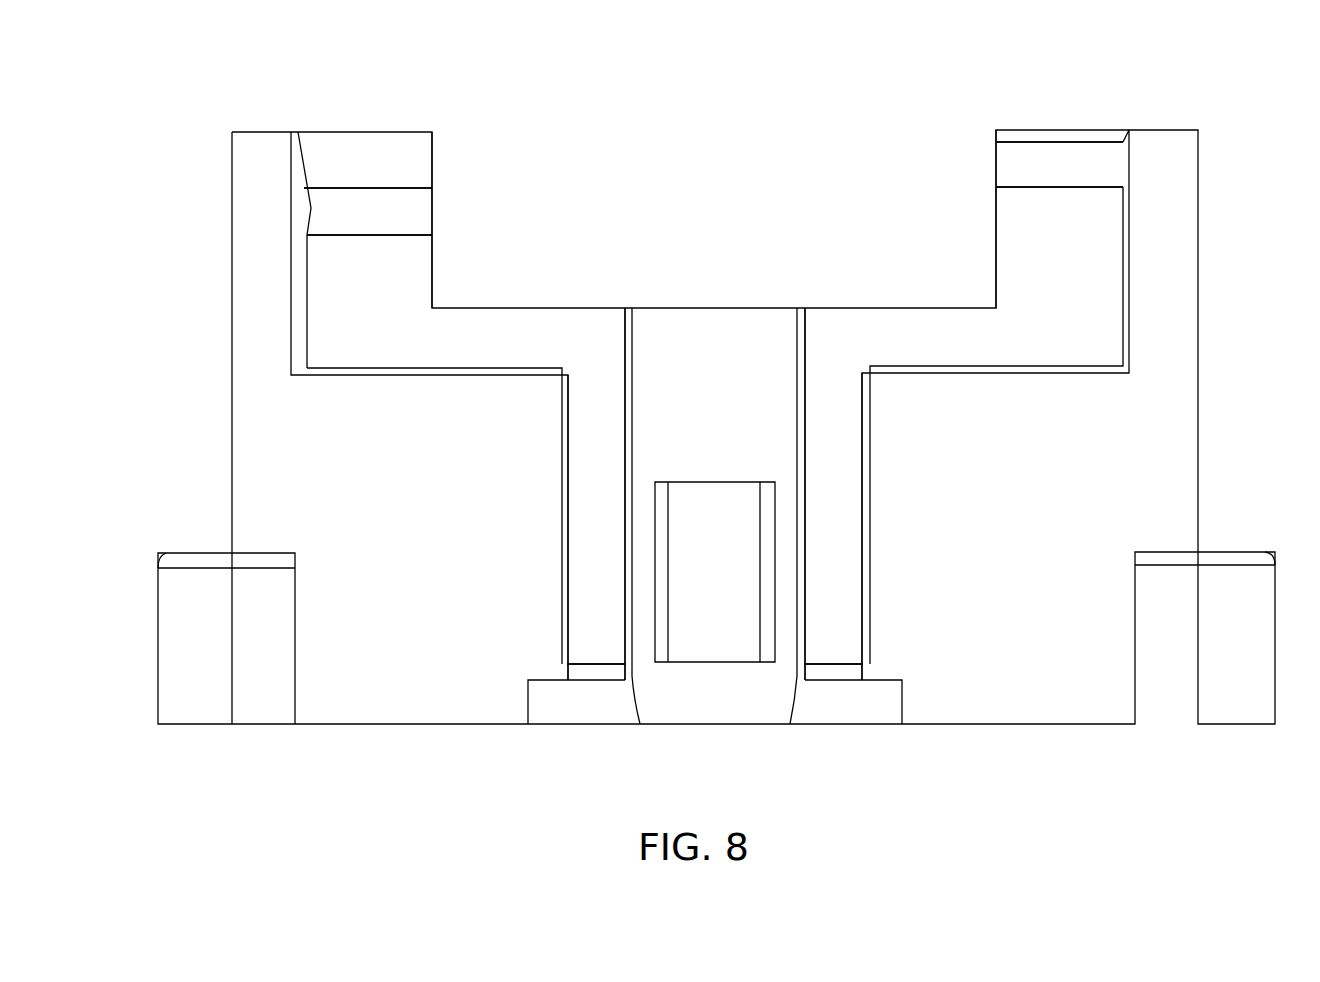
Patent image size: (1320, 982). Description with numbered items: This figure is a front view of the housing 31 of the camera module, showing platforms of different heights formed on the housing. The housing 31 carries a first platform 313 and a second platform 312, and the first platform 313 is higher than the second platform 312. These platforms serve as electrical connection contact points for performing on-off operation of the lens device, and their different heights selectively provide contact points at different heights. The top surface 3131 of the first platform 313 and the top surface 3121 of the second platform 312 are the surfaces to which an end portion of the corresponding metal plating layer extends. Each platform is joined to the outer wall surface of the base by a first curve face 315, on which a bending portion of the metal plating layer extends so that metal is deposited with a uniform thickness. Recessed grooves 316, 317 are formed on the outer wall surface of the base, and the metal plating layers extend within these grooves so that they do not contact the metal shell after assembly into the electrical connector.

The housing 31 is at (215, 208).
The second platform 312 is at (448, 192).
The top surface of the second platform 3121 is at (347, 187).
The first platform 313 is at (985, 142).
The top surface of the first platform 3131 is at (1028, 142).
The first curve face 315 is at (407, 215).
The recessed groove 316 is at (592, 427).
The recessed groove 317 is at (836, 343).